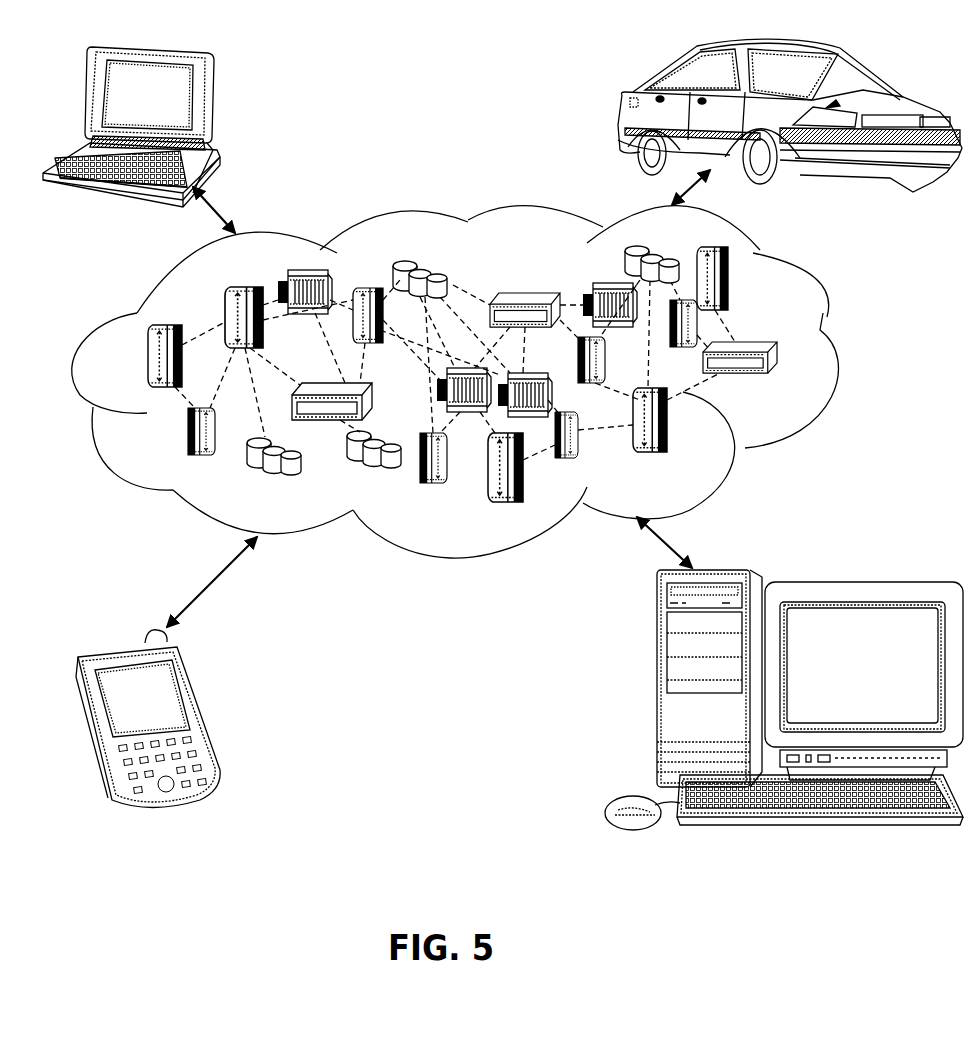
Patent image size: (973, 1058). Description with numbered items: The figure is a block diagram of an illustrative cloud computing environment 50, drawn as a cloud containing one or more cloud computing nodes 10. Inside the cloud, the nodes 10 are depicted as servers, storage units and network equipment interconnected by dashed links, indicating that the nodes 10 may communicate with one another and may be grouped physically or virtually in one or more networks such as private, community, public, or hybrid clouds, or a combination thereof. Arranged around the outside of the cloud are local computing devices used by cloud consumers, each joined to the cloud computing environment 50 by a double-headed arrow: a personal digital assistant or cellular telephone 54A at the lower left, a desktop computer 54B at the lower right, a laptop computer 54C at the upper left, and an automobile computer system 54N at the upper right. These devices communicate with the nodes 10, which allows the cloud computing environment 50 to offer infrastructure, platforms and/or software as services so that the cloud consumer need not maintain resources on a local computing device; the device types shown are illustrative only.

The cloud computing node 10 is at (503, 434).
The cloud computing environment 50 is at (823, 313).
The personal digital assistant or cellular telephone 54A is at (200, 713).
The desktop computer 54B is at (656, 688).
The laptop computer 54C is at (212, 100).
The automobile computer system 54N is at (627, 106).